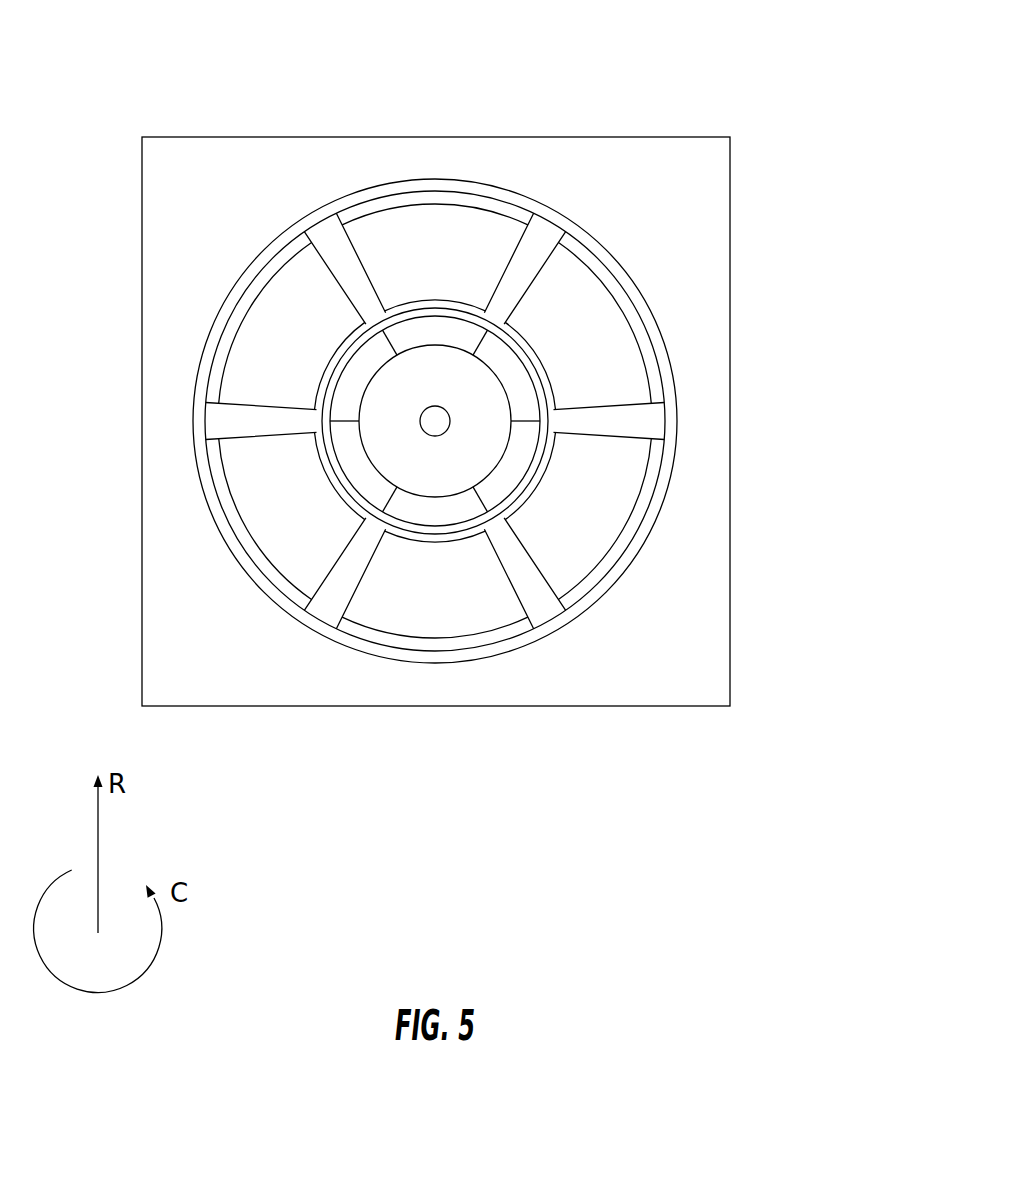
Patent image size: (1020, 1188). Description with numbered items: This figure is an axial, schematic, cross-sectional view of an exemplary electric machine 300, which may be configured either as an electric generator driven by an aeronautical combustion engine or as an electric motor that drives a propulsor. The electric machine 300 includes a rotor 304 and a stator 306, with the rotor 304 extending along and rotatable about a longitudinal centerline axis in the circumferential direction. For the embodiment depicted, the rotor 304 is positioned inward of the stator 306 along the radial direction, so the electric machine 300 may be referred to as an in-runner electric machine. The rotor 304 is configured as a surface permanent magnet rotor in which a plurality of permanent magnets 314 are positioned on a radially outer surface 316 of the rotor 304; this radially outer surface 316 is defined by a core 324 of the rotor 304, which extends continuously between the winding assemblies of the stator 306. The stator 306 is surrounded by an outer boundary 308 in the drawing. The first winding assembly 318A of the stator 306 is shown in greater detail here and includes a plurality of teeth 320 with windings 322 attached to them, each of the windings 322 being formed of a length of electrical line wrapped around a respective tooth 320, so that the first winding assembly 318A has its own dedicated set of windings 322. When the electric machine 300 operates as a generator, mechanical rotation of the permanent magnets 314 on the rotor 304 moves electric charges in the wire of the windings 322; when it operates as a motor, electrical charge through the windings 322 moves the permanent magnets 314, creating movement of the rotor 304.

The electric machine 300 is at (793, 91).
The rotor 304 is at (383, 516).
The stator 306 is at (561, 207).
The plate 308 is at (310, 137).
The permanent magnets 314 is at (350, 449).
The radially outer surface 316 is at (363, 457).
The first winding assembly 318A is at (508, 183).
The teeth 320 is at (663, 368).
The windings 322 is at (627, 405).
The core 324 is at (468, 368).